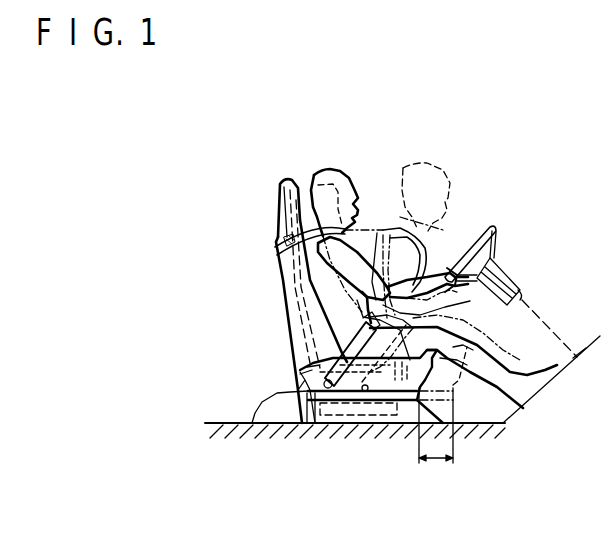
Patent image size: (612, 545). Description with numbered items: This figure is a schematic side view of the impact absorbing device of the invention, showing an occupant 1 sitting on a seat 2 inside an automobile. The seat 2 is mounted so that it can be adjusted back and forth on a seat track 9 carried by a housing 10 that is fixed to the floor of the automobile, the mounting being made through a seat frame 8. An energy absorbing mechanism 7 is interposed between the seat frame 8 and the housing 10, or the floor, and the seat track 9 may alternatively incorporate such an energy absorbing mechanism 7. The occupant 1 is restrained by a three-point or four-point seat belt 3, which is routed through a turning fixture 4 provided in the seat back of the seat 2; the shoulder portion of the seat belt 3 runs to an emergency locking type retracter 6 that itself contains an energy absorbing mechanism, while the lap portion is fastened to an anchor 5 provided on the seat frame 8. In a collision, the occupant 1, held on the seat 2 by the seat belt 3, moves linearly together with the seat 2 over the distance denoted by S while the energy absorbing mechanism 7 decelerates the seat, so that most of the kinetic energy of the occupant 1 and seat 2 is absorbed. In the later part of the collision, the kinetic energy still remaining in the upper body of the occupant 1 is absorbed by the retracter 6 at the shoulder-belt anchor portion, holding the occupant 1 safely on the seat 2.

The occupant 1 is at (334, 176).
The seat 2 is at (278, 197).
The seat belt 3 is at (290, 291).
The turning fixture 4 is at (285, 242).
The anchor 5 is at (342, 402).
The emergency locking type retracter 6 is at (307, 373).
The energy absorbing mechanism 7 is at (370, 415).
The seat frame 8 is at (265, 400).
The seat track 9 is at (298, 402).
The housing 10 is at (320, 414).
The linear movement S is at (436, 439).